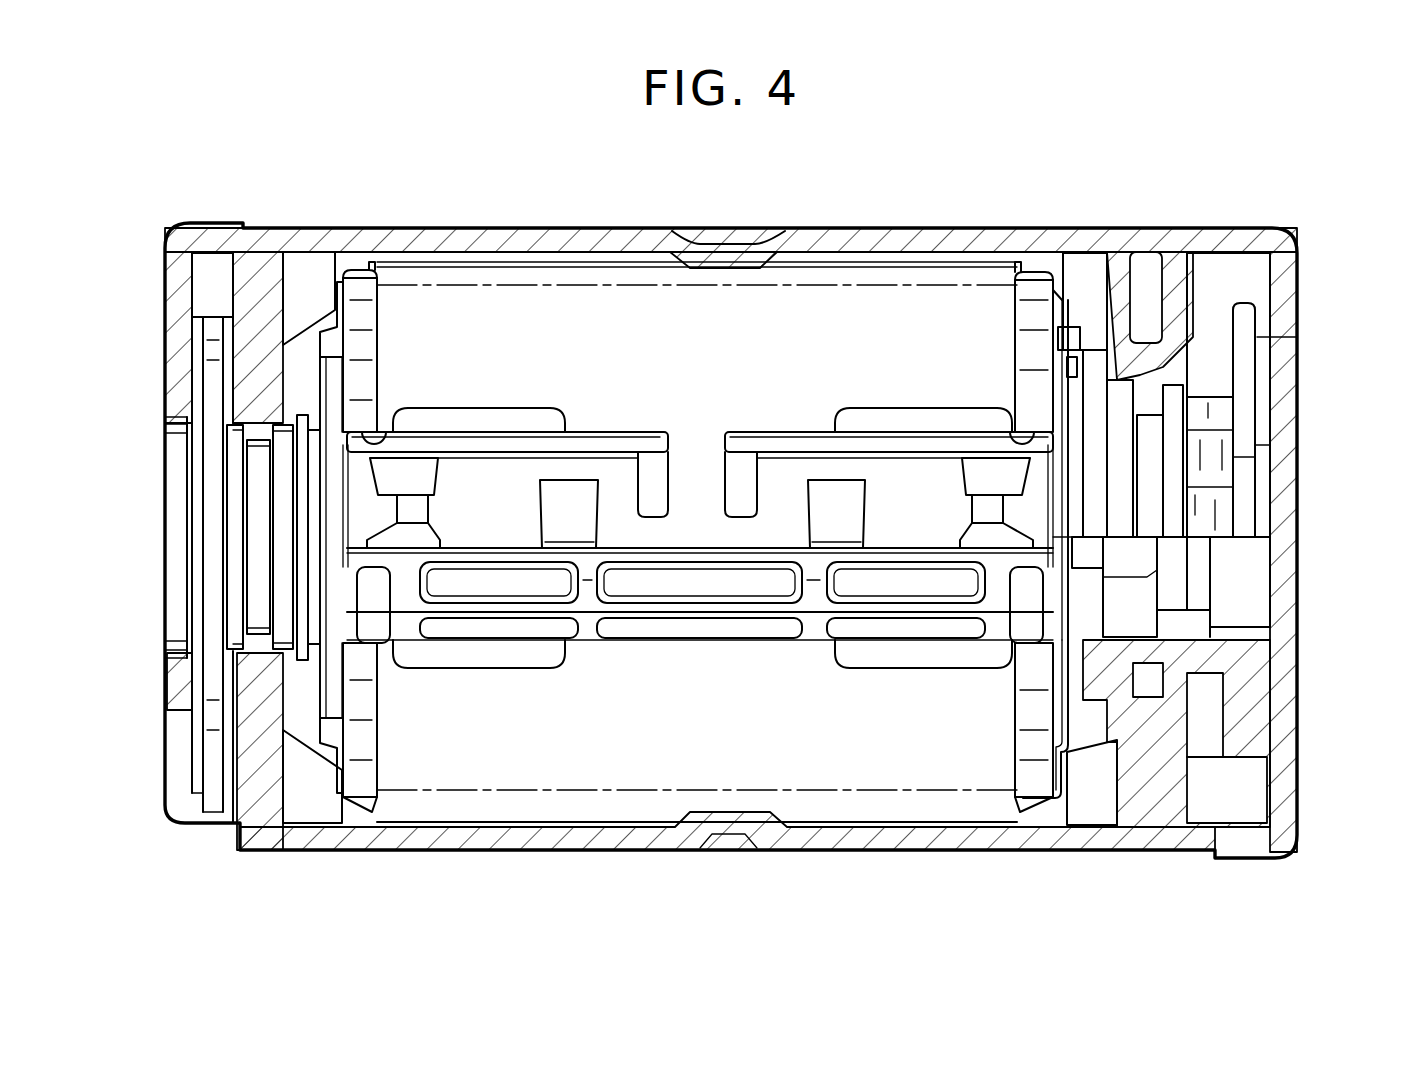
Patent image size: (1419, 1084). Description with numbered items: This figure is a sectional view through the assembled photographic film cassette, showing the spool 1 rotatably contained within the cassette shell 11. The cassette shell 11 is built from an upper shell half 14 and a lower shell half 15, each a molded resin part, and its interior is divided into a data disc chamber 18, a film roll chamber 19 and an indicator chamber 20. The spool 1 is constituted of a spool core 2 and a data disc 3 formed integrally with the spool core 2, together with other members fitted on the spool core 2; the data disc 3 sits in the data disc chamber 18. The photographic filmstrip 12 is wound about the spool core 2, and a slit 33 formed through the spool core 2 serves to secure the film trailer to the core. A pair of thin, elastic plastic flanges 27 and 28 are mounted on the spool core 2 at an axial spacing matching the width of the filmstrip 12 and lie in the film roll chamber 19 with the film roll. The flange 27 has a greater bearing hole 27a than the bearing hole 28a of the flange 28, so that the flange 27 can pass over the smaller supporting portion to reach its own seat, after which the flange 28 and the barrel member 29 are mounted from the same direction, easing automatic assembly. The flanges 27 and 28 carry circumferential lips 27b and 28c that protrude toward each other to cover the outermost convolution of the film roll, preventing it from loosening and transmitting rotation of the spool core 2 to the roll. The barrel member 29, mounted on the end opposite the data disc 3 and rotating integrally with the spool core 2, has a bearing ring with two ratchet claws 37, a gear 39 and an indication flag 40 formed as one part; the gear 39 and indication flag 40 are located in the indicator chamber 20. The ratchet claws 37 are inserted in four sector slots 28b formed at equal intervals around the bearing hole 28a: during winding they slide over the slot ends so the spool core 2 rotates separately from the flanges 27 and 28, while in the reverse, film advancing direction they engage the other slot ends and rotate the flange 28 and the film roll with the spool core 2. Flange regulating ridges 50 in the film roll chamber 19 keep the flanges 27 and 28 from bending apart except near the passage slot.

The spool 1 is at (175, 505).
The spool core 2 is at (628, 432).
The data disc 3 is at (185, 752).
The cassette shell 11 is at (1305, 255).
The photographic filmstrip 12 is at (540, 285).
The upper shell half 14 is at (618, 240).
The lower shell half 15 is at (628, 850).
The data disc chamber 18 is at (220, 250).
The film roll chamber 19 is at (453, 268).
The indicator chamber 20 is at (1213, 265).
The flange 27 is at (330, 330).
The bearing hole 27a is at (345, 740).
The circumferential lip 27b is at (355, 270).
The flange 28 is at (1043, 815).
The bearing hole 28a is at (1058, 396).
The sector slots 28b is at (1060, 340).
The circumferential lip 28c is at (1033, 275).
The barrel member 29 is at (1265, 663).
The slit 33 is at (694, 500).
The ratchet claws 37 is at (1065, 372).
The gear 39 is at (1213, 407).
The indication flag 40 is at (1265, 332).
The flange regulating ridges 50 is at (303, 262).